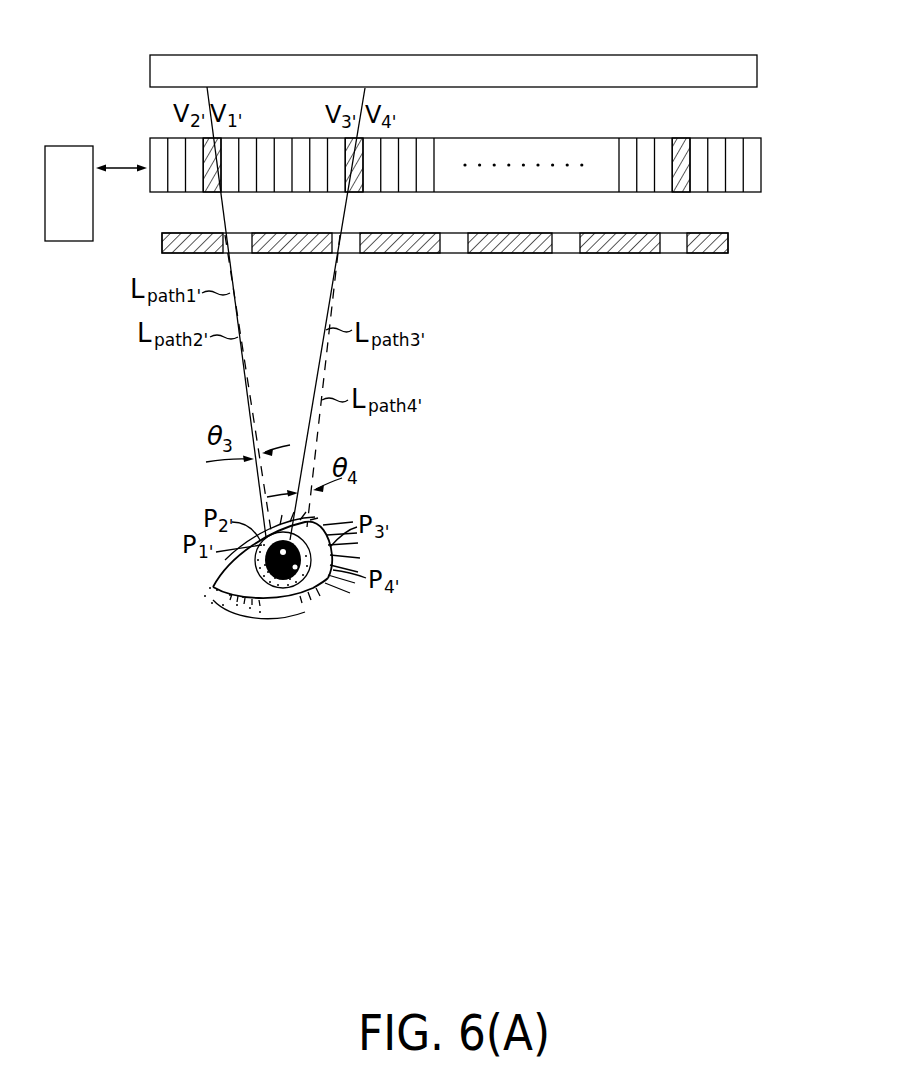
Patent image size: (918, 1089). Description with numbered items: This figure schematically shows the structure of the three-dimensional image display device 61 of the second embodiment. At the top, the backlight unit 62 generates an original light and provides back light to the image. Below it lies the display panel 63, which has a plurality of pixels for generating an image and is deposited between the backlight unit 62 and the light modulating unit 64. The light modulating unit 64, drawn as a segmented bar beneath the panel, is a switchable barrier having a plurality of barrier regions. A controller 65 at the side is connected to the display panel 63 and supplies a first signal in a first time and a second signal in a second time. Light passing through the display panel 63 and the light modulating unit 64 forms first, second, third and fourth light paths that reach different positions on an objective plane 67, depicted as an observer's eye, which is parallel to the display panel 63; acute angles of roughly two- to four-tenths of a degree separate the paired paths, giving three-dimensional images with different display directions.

The 3D image display device 61 is at (432, 138).
The backlight unit 62 is at (757, 71).
The display panel 63 is at (761, 165).
The light modulating unit 64 is at (728, 243).
The controller 65 is at (56, 146).
The objective plane 67 is at (287, 605).